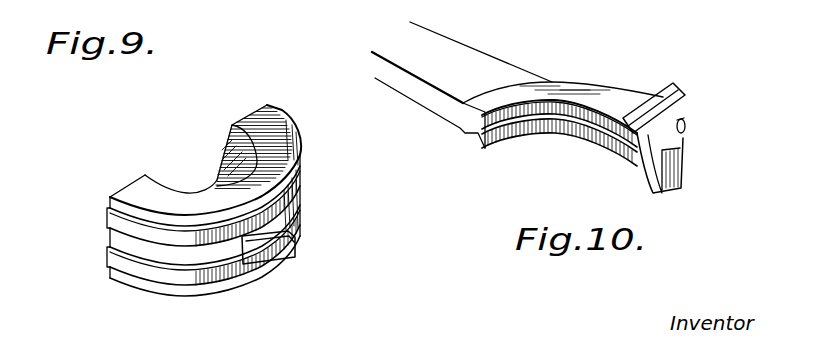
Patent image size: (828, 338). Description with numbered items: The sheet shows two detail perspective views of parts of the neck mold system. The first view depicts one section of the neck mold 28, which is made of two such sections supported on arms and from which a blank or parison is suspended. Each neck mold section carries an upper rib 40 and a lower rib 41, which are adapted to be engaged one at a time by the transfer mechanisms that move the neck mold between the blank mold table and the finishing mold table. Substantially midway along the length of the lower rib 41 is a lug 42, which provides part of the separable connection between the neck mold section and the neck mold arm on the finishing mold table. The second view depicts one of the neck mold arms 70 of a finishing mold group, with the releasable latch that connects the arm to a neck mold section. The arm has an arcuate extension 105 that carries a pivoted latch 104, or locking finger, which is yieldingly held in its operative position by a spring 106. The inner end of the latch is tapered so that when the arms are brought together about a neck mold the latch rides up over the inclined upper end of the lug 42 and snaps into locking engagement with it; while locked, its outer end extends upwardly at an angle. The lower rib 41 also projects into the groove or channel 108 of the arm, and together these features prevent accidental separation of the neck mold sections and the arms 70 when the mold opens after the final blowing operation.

In FIG. 9, the neck mold 28 is at (190, 293).
In FIG. 9, the upper rib 40 is at (112, 220).
In FIG. 9, the lower rib 41 is at (112, 258).
In FIG. 9, the lug 42 is at (291, 247).
In FIG. 10, the neck mold arm 70 is at (488, 63).
In FIG. 10, the pivoted latch 104 is at (667, 93).
In FIG. 10, the arcuate extension 105 is at (595, 93).
In FIG. 10, the spring 106 is at (683, 110).
In FIG. 10, the groove 108 is at (668, 175).